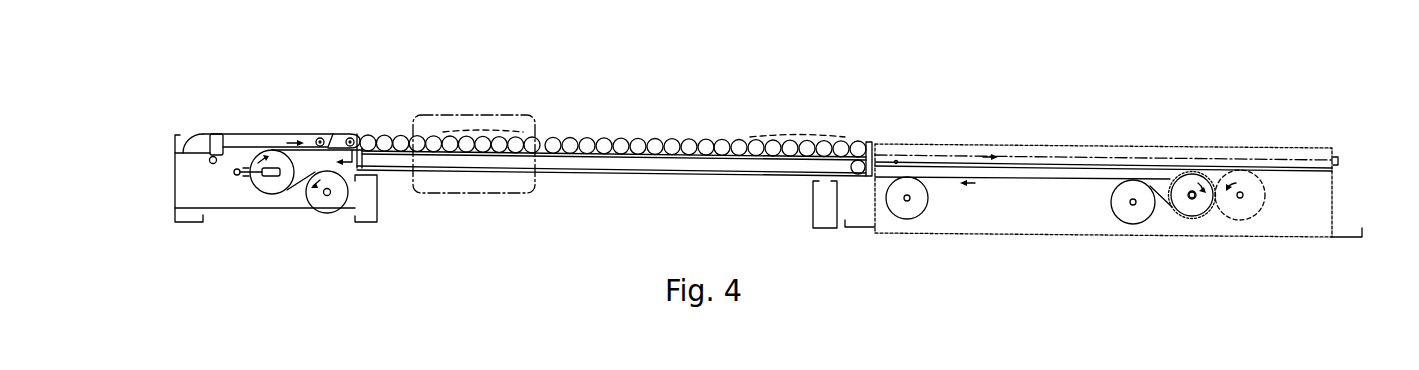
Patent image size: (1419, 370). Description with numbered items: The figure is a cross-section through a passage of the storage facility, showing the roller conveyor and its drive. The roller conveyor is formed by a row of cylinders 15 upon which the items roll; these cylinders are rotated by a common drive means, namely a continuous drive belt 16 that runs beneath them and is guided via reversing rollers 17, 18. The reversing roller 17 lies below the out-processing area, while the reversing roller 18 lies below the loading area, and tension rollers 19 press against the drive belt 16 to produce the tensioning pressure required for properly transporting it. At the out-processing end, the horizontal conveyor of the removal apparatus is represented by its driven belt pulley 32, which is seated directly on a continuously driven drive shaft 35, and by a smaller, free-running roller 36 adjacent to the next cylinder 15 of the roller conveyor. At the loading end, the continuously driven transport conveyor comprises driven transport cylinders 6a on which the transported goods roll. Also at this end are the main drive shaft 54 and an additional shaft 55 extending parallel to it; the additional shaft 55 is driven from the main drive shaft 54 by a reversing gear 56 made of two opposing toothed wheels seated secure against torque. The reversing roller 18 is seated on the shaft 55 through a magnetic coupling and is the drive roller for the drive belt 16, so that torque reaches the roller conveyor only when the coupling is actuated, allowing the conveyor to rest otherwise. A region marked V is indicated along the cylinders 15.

The belt pulley 32 is at (195, 132).
The drive shaft 35 is at (214, 156).
The drive belt 16 is at (322, 138).
The free-running roller 36 is at (353, 138).
The reversing roller 17 is at (265, 195).
The tension roller 19 is at (323, 213).
The cylinder 15 is at (638, 137).
The separating region V is at (475, 195).
The transport cylinder 6a is at (1312, 150).
The reversing roller 18 is at (1192, 216).
The additional shaft 55 is at (1190, 192).
The main drive shaft 54 is at (1242, 192).
The reversing gear 56 is at (1218, 220).